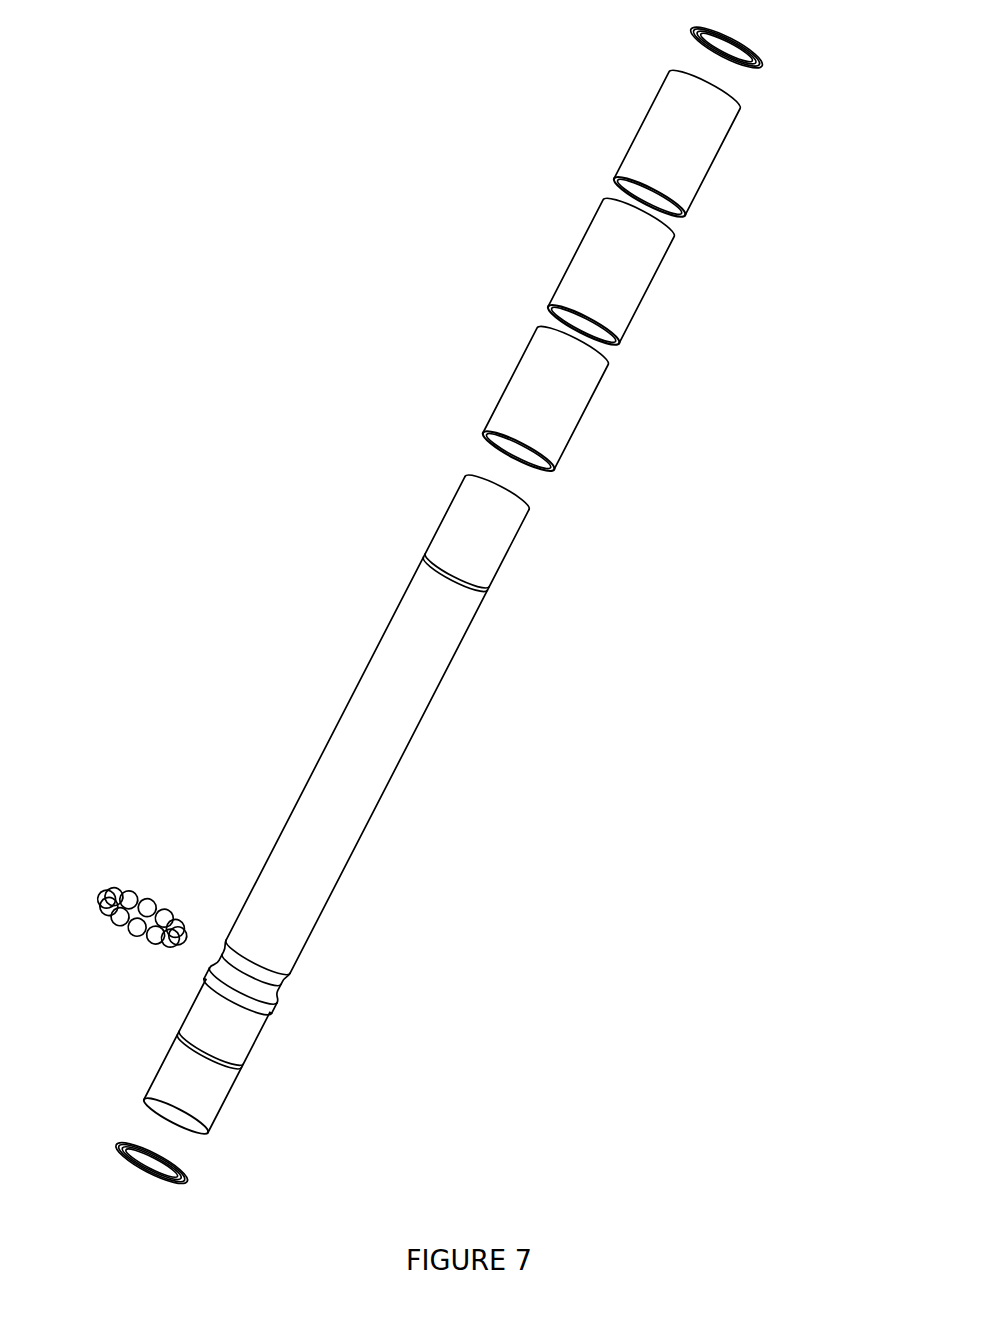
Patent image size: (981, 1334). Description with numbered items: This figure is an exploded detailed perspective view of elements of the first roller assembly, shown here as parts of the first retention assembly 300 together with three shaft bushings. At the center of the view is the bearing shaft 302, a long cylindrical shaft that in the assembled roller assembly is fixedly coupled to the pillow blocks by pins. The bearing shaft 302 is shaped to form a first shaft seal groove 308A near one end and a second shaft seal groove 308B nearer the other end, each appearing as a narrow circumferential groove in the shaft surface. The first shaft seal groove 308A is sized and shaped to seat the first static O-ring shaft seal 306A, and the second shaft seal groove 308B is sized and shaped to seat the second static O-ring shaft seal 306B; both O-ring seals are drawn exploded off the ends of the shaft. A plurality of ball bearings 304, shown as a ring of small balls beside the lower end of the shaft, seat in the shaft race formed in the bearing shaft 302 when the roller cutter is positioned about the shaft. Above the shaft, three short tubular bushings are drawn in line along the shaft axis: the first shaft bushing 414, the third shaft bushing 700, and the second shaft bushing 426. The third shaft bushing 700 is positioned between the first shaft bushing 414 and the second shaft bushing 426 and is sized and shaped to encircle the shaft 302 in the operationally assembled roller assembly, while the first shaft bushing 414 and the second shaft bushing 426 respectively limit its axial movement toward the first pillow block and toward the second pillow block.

The first retention assembly 300 is at (198, 474).
The bearing shaft 302 is at (415, 643).
The ball bearings 304 is at (103, 885).
The first static O-ring shaft seal 306A is at (118, 1143).
The second static O-ring shaft seal 306B is at (700, 45).
The first shaft seal groove 308A is at (178, 1032).
The second shaft seal groove 308B is at (426, 552).
The first shaft bushing 414 is at (505, 381).
The second shaft bushing 426 is at (642, 136).
The third shaft bushing 700 is at (645, 302).